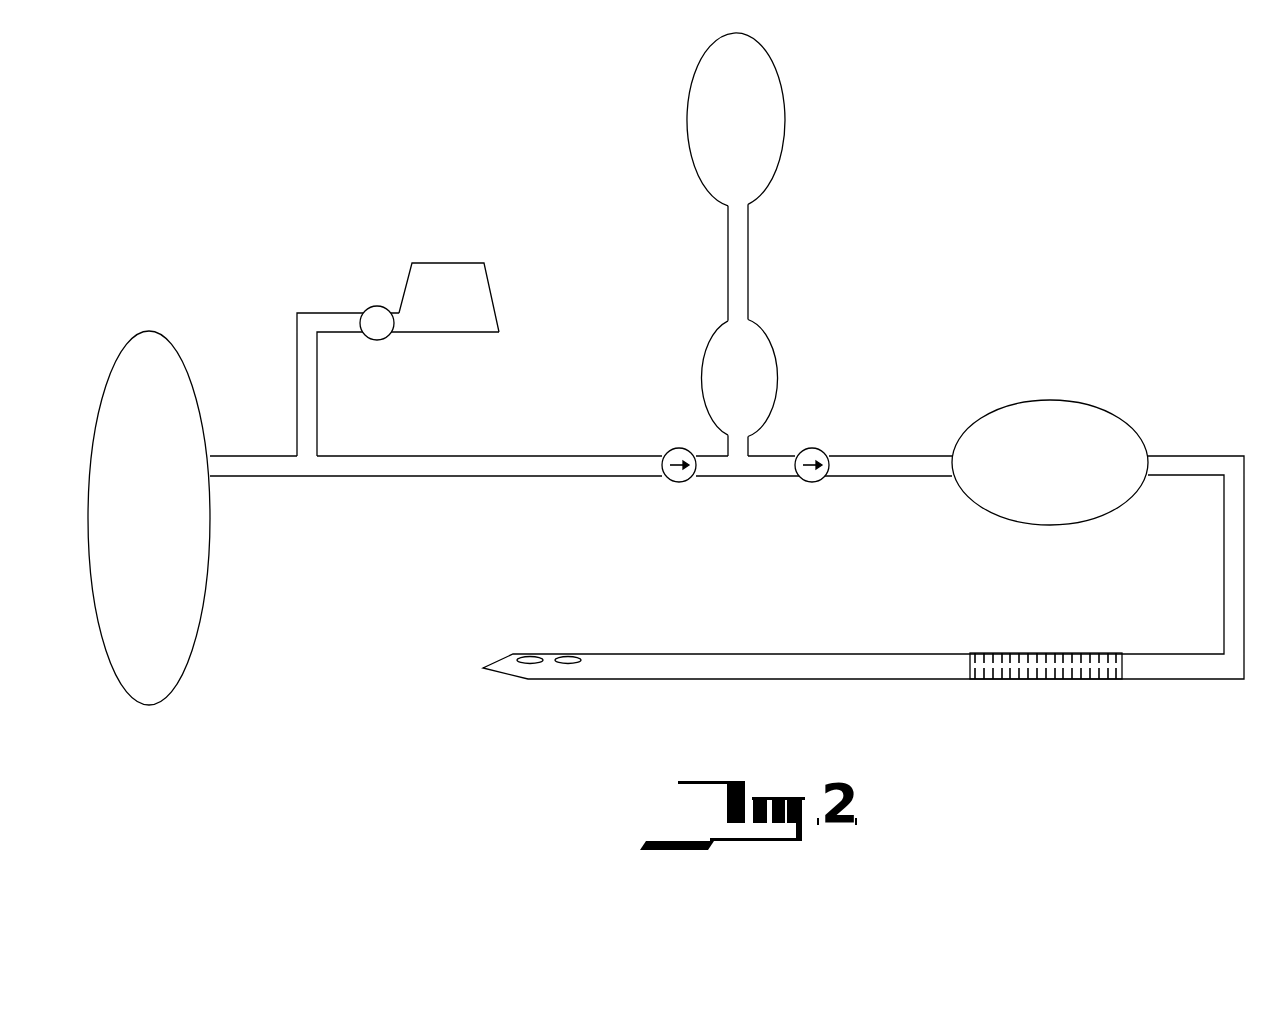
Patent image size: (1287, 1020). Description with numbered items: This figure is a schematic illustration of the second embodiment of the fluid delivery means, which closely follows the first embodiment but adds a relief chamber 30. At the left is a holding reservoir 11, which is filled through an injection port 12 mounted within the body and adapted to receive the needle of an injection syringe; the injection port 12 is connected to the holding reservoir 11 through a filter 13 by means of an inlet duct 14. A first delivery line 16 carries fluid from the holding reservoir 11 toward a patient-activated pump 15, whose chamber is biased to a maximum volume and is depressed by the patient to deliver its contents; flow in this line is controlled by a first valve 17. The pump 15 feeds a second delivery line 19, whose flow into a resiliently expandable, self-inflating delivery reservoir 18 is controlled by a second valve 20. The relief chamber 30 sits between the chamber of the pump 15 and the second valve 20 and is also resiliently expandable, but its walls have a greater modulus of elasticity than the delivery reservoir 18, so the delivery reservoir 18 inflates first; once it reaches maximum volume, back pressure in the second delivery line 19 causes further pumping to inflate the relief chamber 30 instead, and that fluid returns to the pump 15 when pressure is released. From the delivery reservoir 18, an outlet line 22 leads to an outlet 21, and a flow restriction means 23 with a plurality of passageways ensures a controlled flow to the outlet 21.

The holding reservoir 11 is at (175, 350).
The injection port 12 is at (495, 285).
The filter 13 is at (377, 306).
The inlet duct 14 is at (300, 312).
The pump 15 is at (773, 178).
The first delivery line 16 is at (540, 453).
The first valve 17 is at (682, 452).
The delivery reservoir 18 is at (1072, 400).
The second delivery line 19 is at (917, 452).
The second valve 20 is at (813, 450).
The outlet 21 is at (550, 657).
The outlet line 22 is at (823, 680).
The flow restriction means 23 is at (1038, 679).
The relief chamber 30 is at (767, 333).